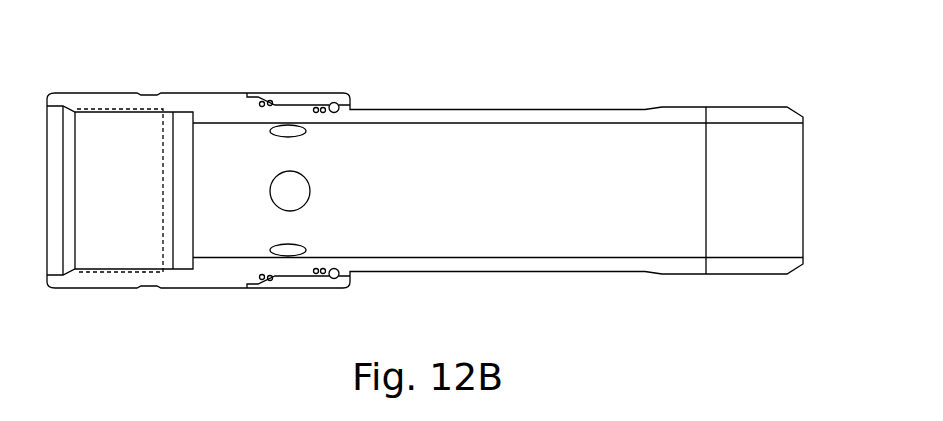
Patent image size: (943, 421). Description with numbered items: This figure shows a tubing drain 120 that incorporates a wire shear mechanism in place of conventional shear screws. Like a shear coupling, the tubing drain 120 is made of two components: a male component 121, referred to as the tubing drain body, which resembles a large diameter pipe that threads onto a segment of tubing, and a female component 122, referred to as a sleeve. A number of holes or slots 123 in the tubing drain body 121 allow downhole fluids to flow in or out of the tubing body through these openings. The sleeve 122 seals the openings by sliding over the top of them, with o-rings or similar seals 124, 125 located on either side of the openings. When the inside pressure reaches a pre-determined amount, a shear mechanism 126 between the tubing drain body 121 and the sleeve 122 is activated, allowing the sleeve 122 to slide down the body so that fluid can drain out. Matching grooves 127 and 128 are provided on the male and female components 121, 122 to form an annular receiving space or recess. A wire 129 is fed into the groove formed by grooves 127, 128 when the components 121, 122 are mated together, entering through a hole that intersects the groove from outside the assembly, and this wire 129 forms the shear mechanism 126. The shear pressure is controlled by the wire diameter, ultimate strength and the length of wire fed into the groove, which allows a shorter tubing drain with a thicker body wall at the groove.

The tubing drain 120 is at (432, 80).
The male component 121 is at (610, 118).
The female component 122 is at (293, 100).
The holes or slots 123 is at (288, 188).
The o-rings or similar seals 124 is at (255, 288).
The o-rings or similar seals 125 is at (312, 273).
The shear mechanism 126 is at (360, 279).
The groove 127 is at (338, 272).
The groove 128 is at (333, 280).
The wire 129 is at (331, 104).